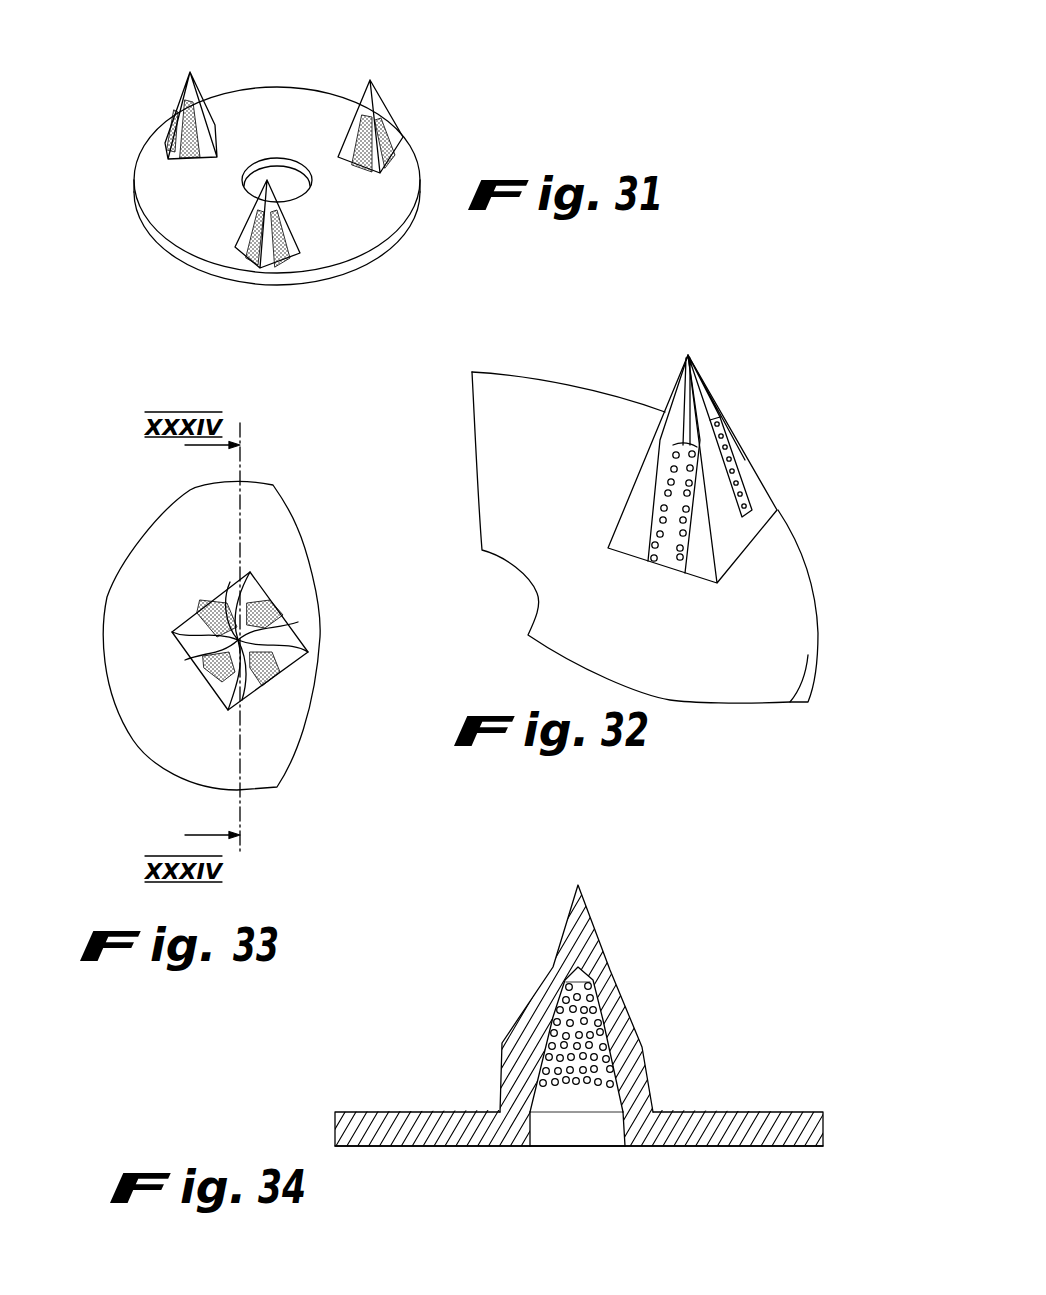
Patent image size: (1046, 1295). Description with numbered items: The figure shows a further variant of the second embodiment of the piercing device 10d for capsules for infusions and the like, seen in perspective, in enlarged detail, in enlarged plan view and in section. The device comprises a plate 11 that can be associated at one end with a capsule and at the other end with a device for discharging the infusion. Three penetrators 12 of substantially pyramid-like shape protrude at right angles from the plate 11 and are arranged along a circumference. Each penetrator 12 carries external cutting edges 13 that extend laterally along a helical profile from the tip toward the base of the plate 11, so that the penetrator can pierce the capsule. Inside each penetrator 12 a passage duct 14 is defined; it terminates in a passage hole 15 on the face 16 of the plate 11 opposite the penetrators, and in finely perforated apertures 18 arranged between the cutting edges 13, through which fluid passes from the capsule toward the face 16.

In FIG. 31, the piercing device 10d is at (135, 118).
In FIG. 31, the plate 11 is at (297, 84).
In FIG. 32, the plate 11 is at (532, 373).
In FIG. 33, the plate 11 is at (281, 497).
In FIG. 34, the plate 11 is at (380, 1108).
In FIG. 31, the penetrator 12 is at (393, 108).
In FIG. 32, the penetrator 12 is at (662, 565).
In FIG. 33, the penetrator 12 is at (189, 610).
In FIG. 34, the penetrator 12 is at (650, 1020).
In FIG. 32, the external cutting edge 13 is at (718, 420).
In FIG. 33, the external cutting edge 13 is at (238, 640).
In FIG. 34, the external cutting edge 13 is at (502, 1083).
In FIG. 34, the passage duct 14 is at (547, 1103).
In FIG. 34, the passage hole 15 is at (620, 1133).
In FIG. 31, the face 16 is at (178, 263).
In FIG. 32, the face 16 is at (798, 678).
In FIG. 34, the face 16 is at (752, 1147).
In FIG. 32, the apertures 18 is at (732, 477).
In FIG. 33, the apertures 18 is at (206, 603).
In FIG. 34, the apertures 18 is at (597, 1077).